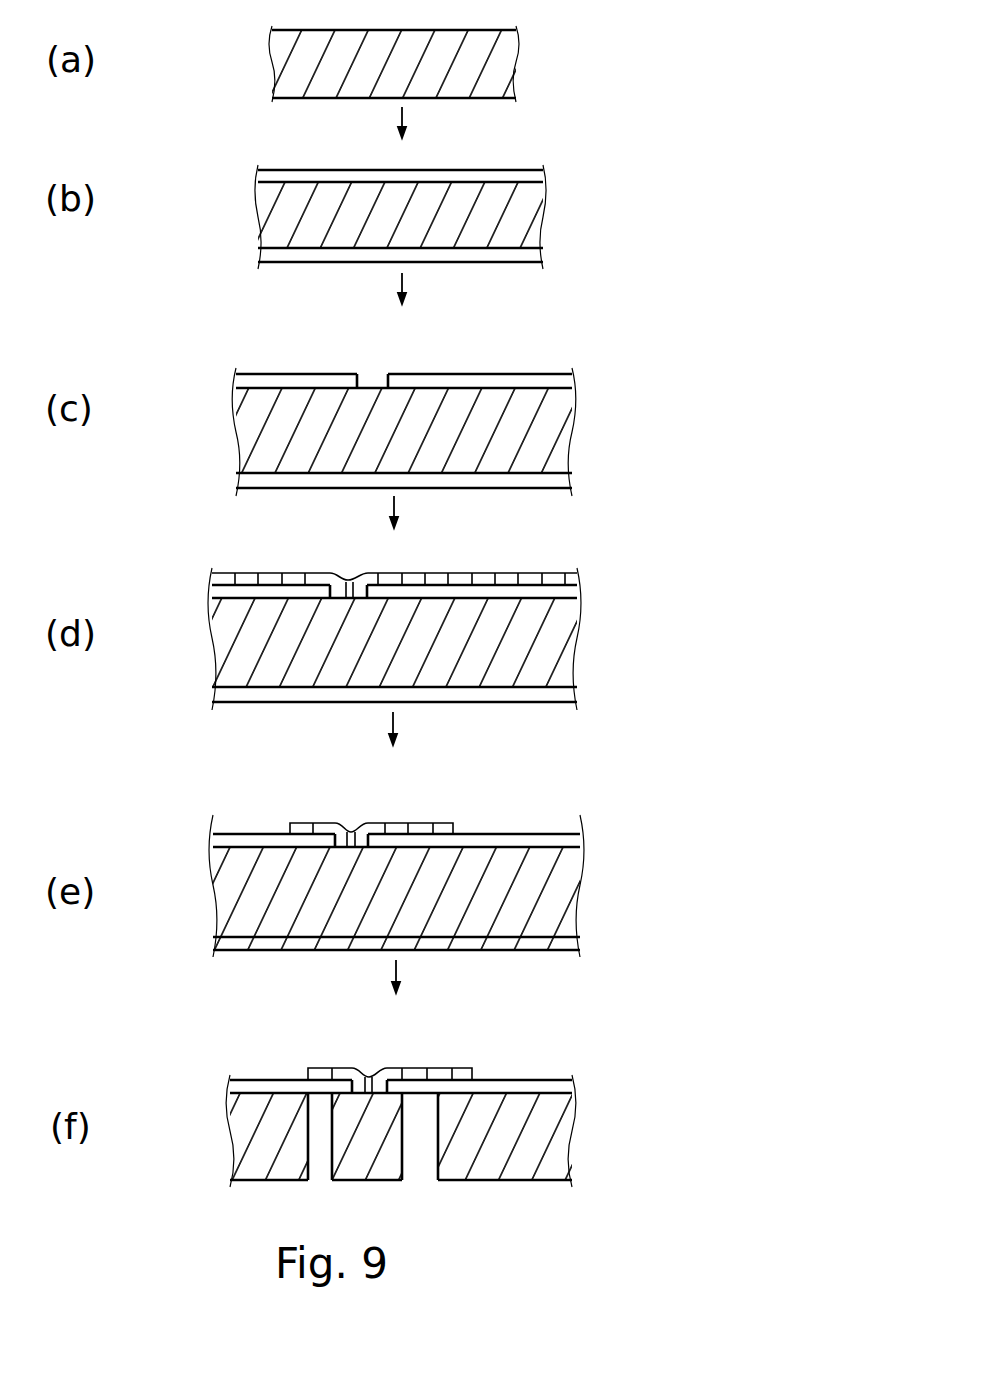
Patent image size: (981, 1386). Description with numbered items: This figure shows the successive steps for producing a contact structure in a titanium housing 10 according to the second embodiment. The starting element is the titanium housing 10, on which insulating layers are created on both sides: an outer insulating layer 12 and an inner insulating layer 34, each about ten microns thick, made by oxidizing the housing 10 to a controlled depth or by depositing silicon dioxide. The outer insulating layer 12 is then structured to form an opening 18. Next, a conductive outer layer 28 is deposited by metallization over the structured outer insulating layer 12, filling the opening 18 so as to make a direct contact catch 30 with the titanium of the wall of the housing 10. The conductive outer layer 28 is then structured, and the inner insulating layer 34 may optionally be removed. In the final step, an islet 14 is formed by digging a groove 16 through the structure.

The titanium housing 10 is at (503, 67).
The outer insulating layer 12 is at (545, 177).
The inner insulating layer 34 is at (545, 256).
The opening 18 is at (372, 380).
The conductive outer layer 28 is at (510, 580).
The direct contact catch 30 is at (347, 600).
The groove 16 is at (318, 1163).
The islet 14 is at (365, 1163).